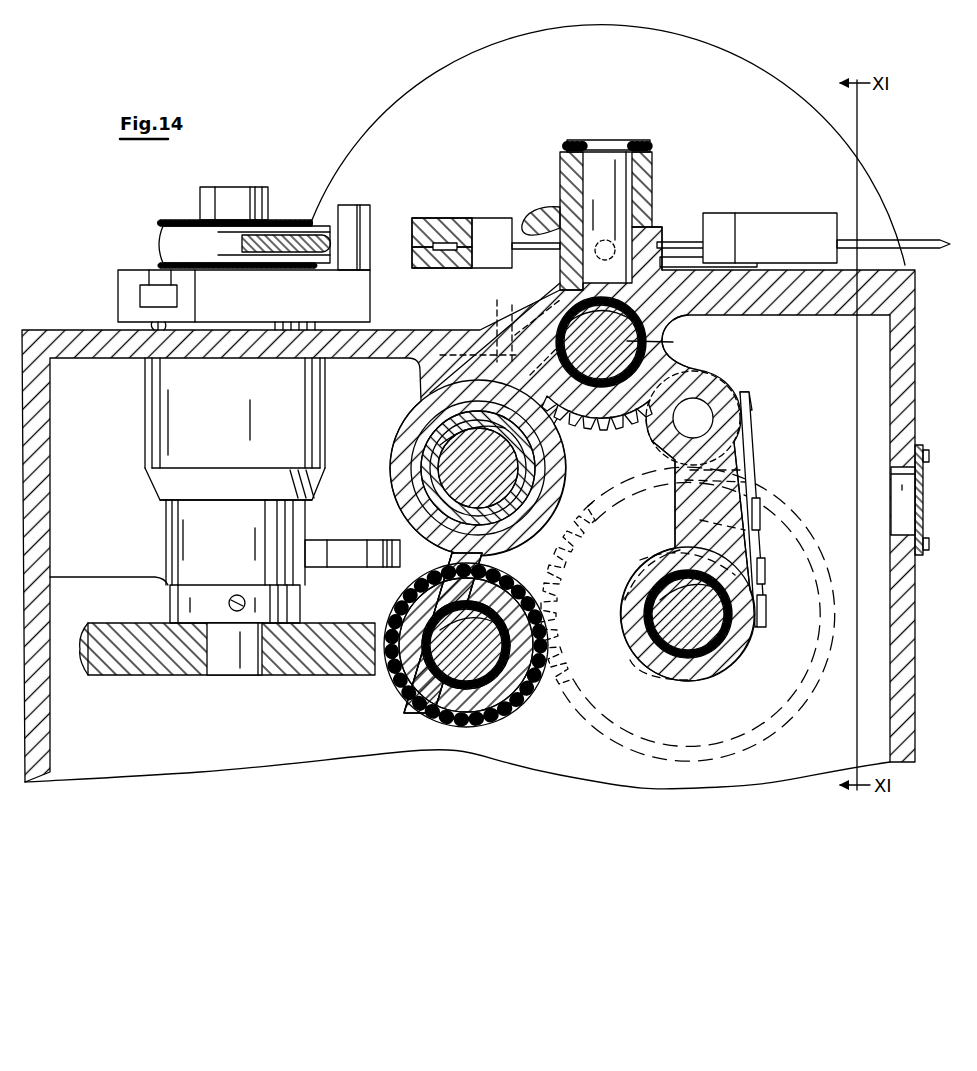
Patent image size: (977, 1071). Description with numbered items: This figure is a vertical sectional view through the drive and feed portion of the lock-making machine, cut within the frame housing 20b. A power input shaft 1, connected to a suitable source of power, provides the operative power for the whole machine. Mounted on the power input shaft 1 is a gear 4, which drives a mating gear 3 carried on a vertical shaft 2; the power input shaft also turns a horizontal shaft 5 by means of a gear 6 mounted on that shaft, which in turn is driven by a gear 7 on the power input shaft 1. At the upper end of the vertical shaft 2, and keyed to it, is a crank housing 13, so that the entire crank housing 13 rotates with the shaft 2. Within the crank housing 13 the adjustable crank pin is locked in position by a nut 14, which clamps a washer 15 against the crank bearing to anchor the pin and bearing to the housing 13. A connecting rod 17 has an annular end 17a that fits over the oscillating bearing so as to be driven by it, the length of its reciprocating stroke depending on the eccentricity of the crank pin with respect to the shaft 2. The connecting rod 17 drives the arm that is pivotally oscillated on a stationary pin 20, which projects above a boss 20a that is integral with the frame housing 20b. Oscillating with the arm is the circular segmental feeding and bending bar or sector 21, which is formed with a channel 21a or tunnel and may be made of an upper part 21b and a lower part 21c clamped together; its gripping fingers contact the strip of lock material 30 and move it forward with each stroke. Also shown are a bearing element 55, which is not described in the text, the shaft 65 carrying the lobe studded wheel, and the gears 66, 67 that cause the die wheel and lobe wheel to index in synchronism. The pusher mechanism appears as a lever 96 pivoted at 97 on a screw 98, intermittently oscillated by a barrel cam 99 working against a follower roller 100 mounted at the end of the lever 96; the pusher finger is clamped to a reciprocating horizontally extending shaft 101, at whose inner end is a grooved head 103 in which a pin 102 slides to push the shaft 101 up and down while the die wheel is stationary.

The power input shaft 1 is at (450, 658).
The vertical shaft 2 is at (230, 675).
The mating gear 3 is at (180, 675).
The gear 4 is at (423, 700).
The horizontal shaft 5 is at (688, 635).
The gear 6 is at (823, 702).
The gear 7 is at (487, 717).
The crank housing 13 is at (118, 270).
The nut 14 is at (268, 198).
The washer 15 is at (280, 220).
The connecting rod 17 is at (316, 242).
The annular end 17a is at (164, 248).
The stationary pin 20 is at (622, 142).
The boss 20a is at (657, 228).
The frame housing 20b is at (417, 330).
The feeding and bending bar 21 is at (449, 233).
The channel 21a is at (448, 240).
The upper part 21b is at (470, 220).
The lower part 21c is at (463, 270).
The material 30 is at (447, 240).
The bearing 55 is at (677, 338).
The shaft 65 is at (430, 427).
The gear 66 is at (500, 312).
The gear 67 is at (690, 355).
The lever 96 is at (745, 447).
The pivot 97 is at (757, 542).
The screw 98 is at (760, 500).
The barrel cam 99 is at (708, 629).
The follower roller 100 is at (747, 575).
The reciprocating shaft 101 is at (703, 403).
The pin 102 is at (738, 430).
The grooved head 103 is at (745, 393).